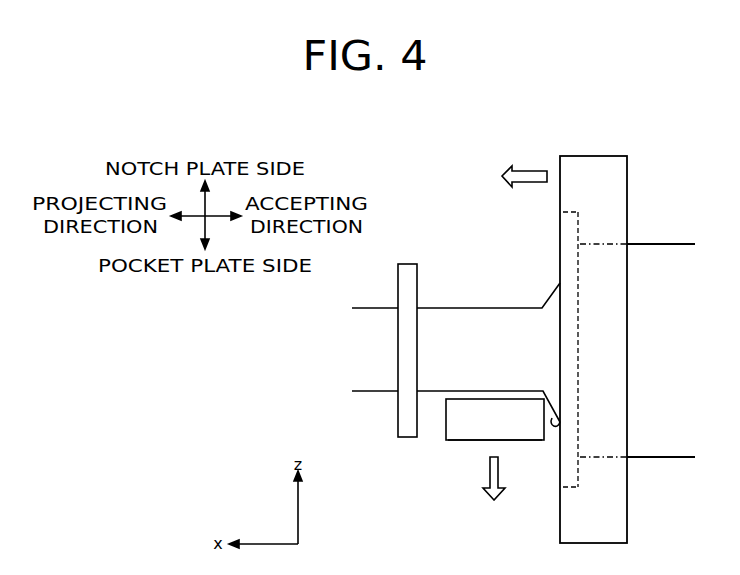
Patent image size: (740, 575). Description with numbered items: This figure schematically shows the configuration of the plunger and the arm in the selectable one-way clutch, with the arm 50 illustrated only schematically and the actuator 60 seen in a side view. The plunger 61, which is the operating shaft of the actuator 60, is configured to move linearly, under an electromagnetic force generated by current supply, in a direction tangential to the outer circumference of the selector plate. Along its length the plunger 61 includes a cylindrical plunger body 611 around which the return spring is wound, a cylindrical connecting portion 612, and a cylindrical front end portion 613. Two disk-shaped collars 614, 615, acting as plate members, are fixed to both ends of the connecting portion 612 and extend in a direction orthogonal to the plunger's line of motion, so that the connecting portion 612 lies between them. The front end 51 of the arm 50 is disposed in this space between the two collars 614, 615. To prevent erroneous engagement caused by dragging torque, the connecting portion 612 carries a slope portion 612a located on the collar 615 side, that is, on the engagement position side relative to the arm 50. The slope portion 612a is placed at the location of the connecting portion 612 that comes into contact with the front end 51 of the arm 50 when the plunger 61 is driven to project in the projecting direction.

The actuator 60 is at (666, 150).
The plunger body 611 is at (663, 243).
The connecting portion 612 is at (483, 306).
The slope portion 612a is at (557, 421).
The front end portion 613 is at (378, 306).
The collar 614 is at (408, 263).
The collar 615 is at (582, 471).
The plunger 61 is at (532, 338).
The arm 50 is at (492, 457).
The front end of the arm 51 is at (523, 442).